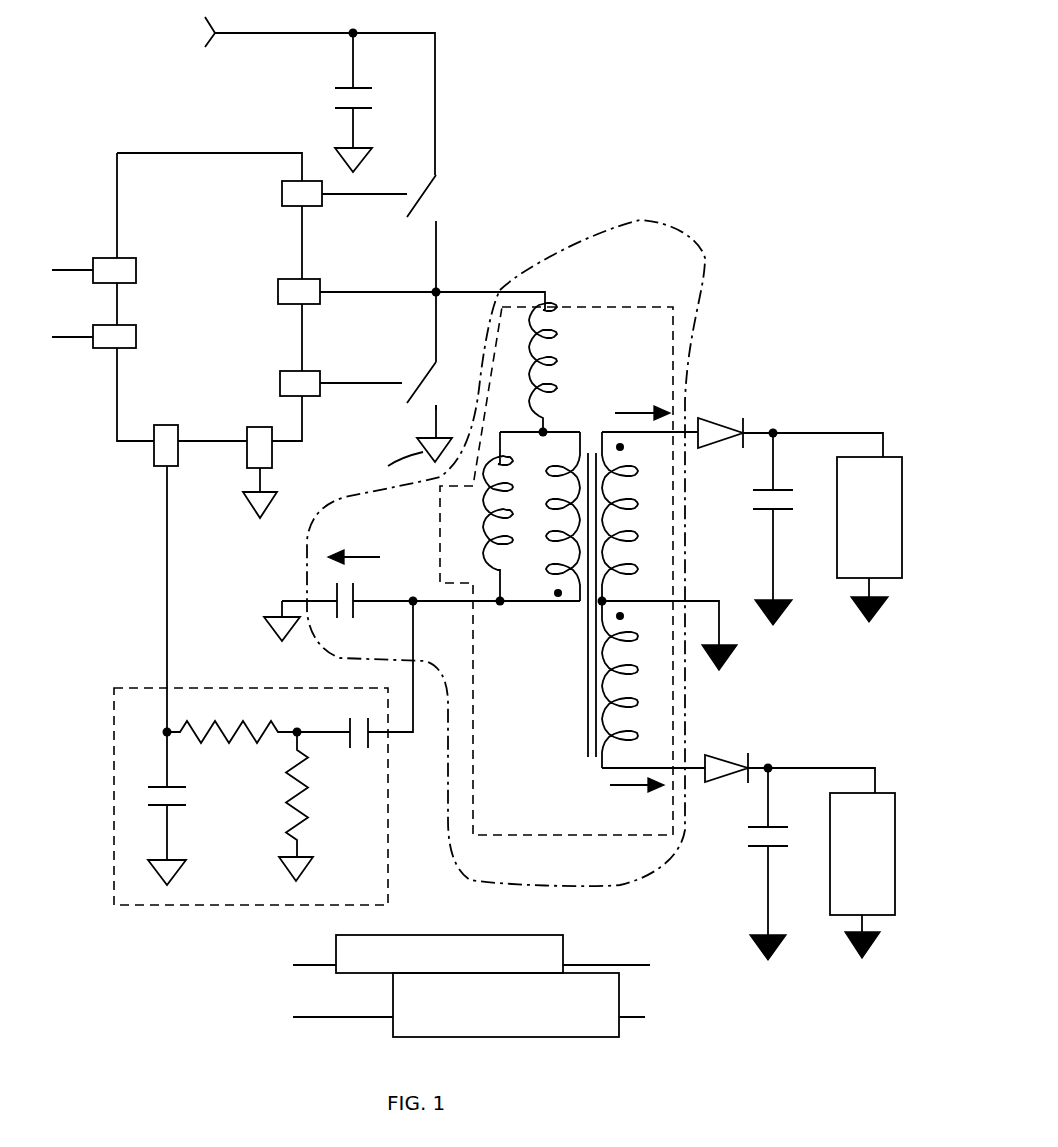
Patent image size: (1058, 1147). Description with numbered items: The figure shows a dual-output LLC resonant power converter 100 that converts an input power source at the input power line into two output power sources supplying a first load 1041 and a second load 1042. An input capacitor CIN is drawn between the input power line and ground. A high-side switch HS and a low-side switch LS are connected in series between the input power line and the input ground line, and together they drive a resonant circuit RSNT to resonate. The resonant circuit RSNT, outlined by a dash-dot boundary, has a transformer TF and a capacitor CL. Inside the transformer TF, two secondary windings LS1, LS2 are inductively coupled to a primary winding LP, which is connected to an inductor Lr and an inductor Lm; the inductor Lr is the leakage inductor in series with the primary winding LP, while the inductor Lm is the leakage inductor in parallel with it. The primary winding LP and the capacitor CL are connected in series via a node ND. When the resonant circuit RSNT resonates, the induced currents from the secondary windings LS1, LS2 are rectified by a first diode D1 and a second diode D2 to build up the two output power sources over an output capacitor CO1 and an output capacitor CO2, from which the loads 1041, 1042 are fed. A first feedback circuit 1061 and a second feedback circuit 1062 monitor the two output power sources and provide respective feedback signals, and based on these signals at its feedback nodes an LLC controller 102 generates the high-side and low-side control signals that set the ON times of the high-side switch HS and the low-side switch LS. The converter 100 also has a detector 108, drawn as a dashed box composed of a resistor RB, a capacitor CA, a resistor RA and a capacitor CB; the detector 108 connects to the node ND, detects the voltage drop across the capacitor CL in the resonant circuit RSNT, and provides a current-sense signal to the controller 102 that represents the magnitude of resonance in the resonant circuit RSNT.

The dual-output LLC resonant power converter 100 is at (503, 66).
The LLC controller 102 is at (180, 185).
The detector 108 is at (142, 688).
The load 1041 is at (893, 542).
The load 1042 is at (886, 877).
The feedback circuit 1061 is at (558, 966).
The feedback circuit 1062 is at (526, 1029).
The input capacitor CIN is at (338, 102).
The high-side switch HS is at (442, 268).
The low-side switch LS is at (435, 386).
The resonant circuit RSNT is at (643, 220).
The transformer TF is at (632, 305).
The inductor Lr is at (554, 367).
The inductor Lm is at (480, 516).
The primary winding LP is at (551, 516).
The secondary winding LS1 is at (635, 519).
The secondary winding LS2 is at (637, 684).
The diode D1 is at (720, 417).
The diode D2 is at (724, 754).
The capacitor CO1 is at (752, 529).
The capacitor CO2 is at (742, 864).
The capacitor CL is at (363, 609).
The node ND is at (418, 606).
The resistor RB is at (232, 719).
The capacitor CA is at (332, 719).
The resistor RA is at (308, 806).
The capacitor CB is at (184, 836).